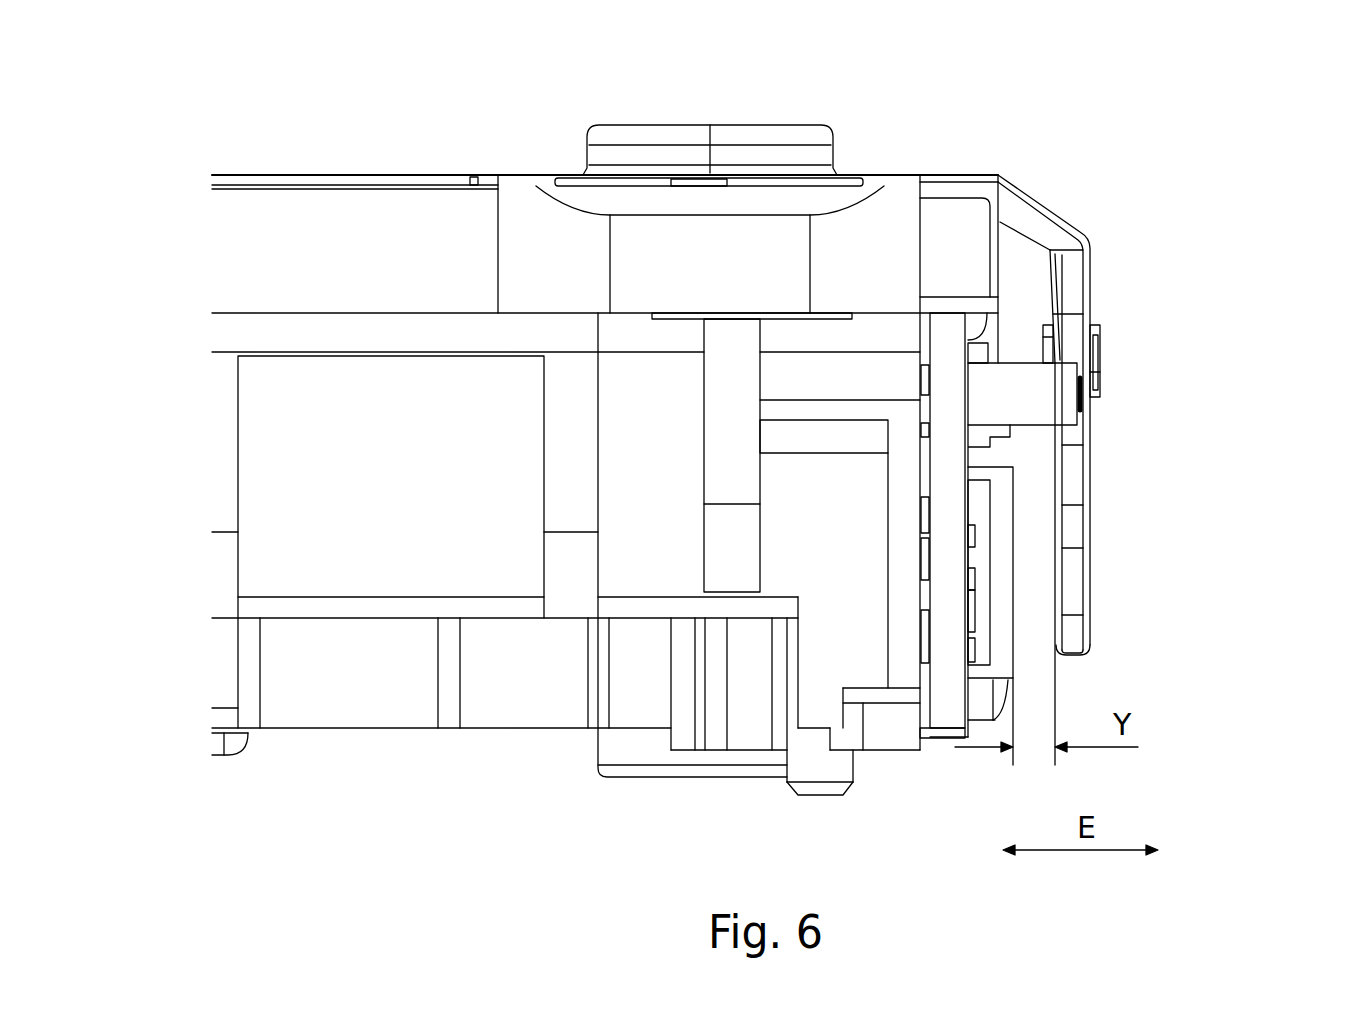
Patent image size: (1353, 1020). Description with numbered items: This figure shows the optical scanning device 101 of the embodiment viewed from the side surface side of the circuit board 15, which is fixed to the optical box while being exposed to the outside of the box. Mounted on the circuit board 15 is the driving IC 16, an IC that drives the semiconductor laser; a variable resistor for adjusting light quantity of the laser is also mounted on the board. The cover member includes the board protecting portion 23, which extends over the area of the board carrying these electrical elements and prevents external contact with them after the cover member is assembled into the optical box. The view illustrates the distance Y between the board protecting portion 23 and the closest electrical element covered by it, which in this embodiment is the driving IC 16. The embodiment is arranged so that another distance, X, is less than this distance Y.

The optical scanning device 101 is at (955, 168).
The board protecting portion 23 is at (1088, 318).
The driving IC 16 is at (1002, 538).
The circuit board 15 is at (955, 682).